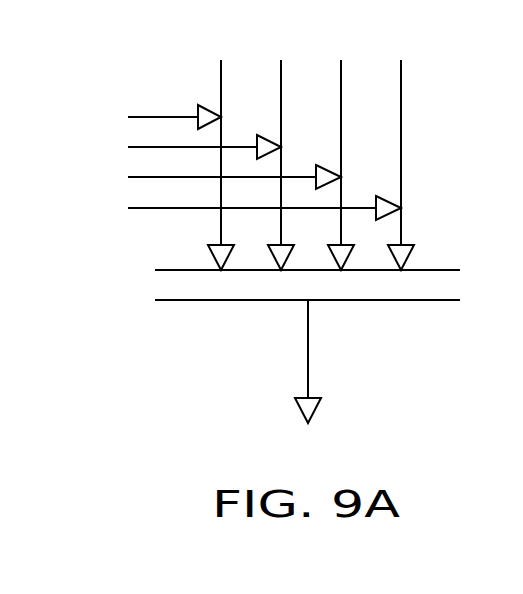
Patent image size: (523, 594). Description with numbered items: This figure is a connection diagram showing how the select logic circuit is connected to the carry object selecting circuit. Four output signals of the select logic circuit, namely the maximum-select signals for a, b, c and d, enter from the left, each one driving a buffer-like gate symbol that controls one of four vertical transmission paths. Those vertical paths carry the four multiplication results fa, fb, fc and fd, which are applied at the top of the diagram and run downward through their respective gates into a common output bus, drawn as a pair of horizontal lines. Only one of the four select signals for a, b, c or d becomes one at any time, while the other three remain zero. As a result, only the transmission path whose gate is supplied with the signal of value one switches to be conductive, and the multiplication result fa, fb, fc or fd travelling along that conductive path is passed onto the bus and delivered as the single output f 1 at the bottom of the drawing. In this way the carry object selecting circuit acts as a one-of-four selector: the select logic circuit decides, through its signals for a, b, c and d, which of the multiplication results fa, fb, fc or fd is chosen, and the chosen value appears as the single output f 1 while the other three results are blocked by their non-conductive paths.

The max a input a is at (133, 117).
The max b input b is at (163, 147).
The max c input c is at (193, 177).
The max d input d is at (223, 208).
The multiplication result fa is at (220, 146).
The multiplication result fb is at (280, 146).
The multiplication result fc is at (340, 146).
The multiplication result fd is at (400, 146).
The output f1 1 is at (308, 379).